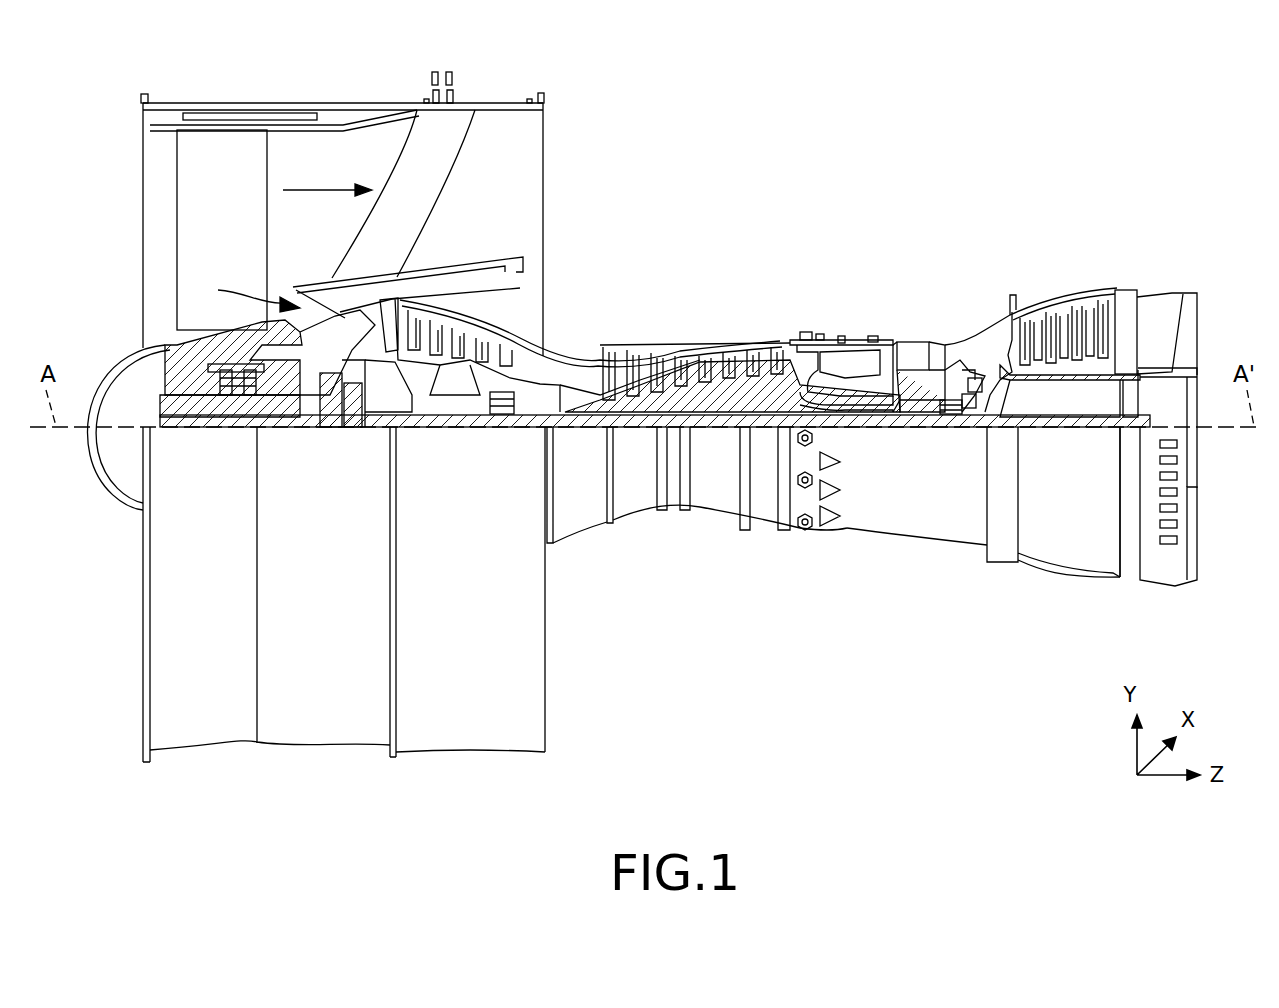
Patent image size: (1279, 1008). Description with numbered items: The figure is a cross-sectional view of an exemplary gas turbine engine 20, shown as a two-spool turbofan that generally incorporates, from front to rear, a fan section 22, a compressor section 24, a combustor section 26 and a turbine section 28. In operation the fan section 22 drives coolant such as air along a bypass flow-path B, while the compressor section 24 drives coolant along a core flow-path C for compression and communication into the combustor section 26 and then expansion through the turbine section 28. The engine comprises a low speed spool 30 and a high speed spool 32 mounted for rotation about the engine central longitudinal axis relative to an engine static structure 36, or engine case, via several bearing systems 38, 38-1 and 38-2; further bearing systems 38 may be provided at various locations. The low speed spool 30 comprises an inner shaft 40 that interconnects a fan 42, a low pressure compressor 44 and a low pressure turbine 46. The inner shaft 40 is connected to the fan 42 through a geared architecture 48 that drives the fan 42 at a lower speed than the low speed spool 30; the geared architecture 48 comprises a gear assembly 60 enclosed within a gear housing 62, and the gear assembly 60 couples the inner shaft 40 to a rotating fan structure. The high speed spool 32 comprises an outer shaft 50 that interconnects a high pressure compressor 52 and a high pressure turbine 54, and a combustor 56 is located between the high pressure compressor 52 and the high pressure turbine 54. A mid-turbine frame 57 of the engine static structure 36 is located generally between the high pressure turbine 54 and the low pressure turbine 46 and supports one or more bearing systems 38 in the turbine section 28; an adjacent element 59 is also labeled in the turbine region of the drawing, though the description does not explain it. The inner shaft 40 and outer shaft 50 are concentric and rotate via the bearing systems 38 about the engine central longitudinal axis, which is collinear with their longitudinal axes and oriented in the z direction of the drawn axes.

The gas turbine engine 20 is at (897, 143).
The fan section 22 is at (390, 80).
The compressor section 24 is at (397, 222).
The combustor section 26 is at (790, 222).
The turbine section 28 is at (1125, 222).
The low speed spool 30 is at (723, 432).
The high speed spool 32 is at (762, 396).
The engine static structure 36 is at (322, 727).
The bearing system 38 is at (966, 420).
The bearing system 38-1 is at (233, 403).
The bearing system 38-2 is at (498, 432).
The inner shaft 40 is at (568, 427).
The fan 42 is at (229, 235).
The low pressure compressor 44 is at (478, 318).
The low pressure turbine 46 is at (1057, 307).
The geared architecture 48 is at (352, 432).
The outer shaft 50 is at (836, 408).
The high pressure compressor 52 is at (698, 396).
The high pressure turbine 54 is at (920, 343).
The combustor 56 is at (840, 363).
The mid-turbine frame 57 is at (968, 352).
The airfoils 59 is at (969, 340).
The gear assembly 60 is at (392, 428).
The gear housing 62 is at (357, 381).
The bypass flow-path B is at (310, 196).
The core flow-path C is at (248, 294).